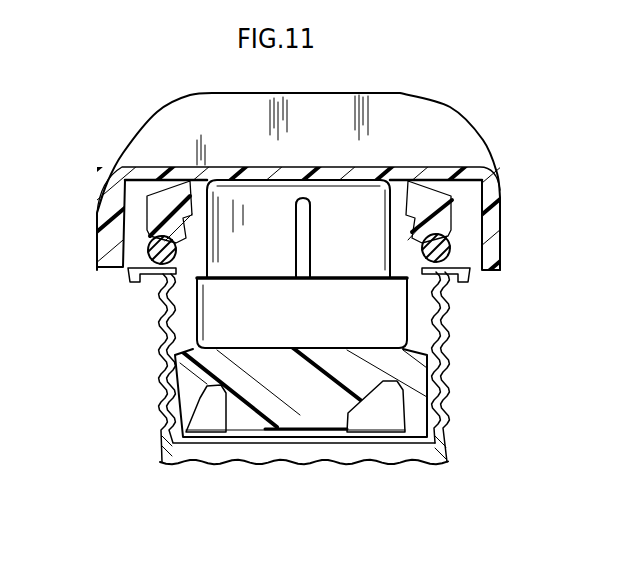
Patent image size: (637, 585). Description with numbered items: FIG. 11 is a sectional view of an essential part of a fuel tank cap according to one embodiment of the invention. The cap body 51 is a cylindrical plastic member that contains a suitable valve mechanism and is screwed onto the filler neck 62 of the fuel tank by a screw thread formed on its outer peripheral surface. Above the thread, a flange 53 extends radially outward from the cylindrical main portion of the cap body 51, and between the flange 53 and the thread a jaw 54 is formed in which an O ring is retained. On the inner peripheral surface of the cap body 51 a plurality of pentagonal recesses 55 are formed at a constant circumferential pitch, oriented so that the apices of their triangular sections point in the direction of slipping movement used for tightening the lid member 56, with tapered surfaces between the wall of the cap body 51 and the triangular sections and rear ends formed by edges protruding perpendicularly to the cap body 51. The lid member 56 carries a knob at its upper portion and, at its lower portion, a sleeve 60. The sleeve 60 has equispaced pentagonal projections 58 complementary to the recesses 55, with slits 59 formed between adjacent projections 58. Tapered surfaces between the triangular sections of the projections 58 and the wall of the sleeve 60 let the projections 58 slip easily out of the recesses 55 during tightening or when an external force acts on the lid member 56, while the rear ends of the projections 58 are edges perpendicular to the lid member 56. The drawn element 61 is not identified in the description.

The cap body 51 is at (410, 377).
The flange 53 is at (492, 207).
The jaw 54 is at (152, 280).
The pentagonal recesses 55 is at (440, 278).
The lid member 56 is at (96, 207).
The pentagonal projections 58 is at (387, 260).
The slits 59 is at (305, 263).
The sleeve 60 is at (268, 255).
The sealing ball 61 is at (140, 248).
The filler neck 62 is at (155, 336).